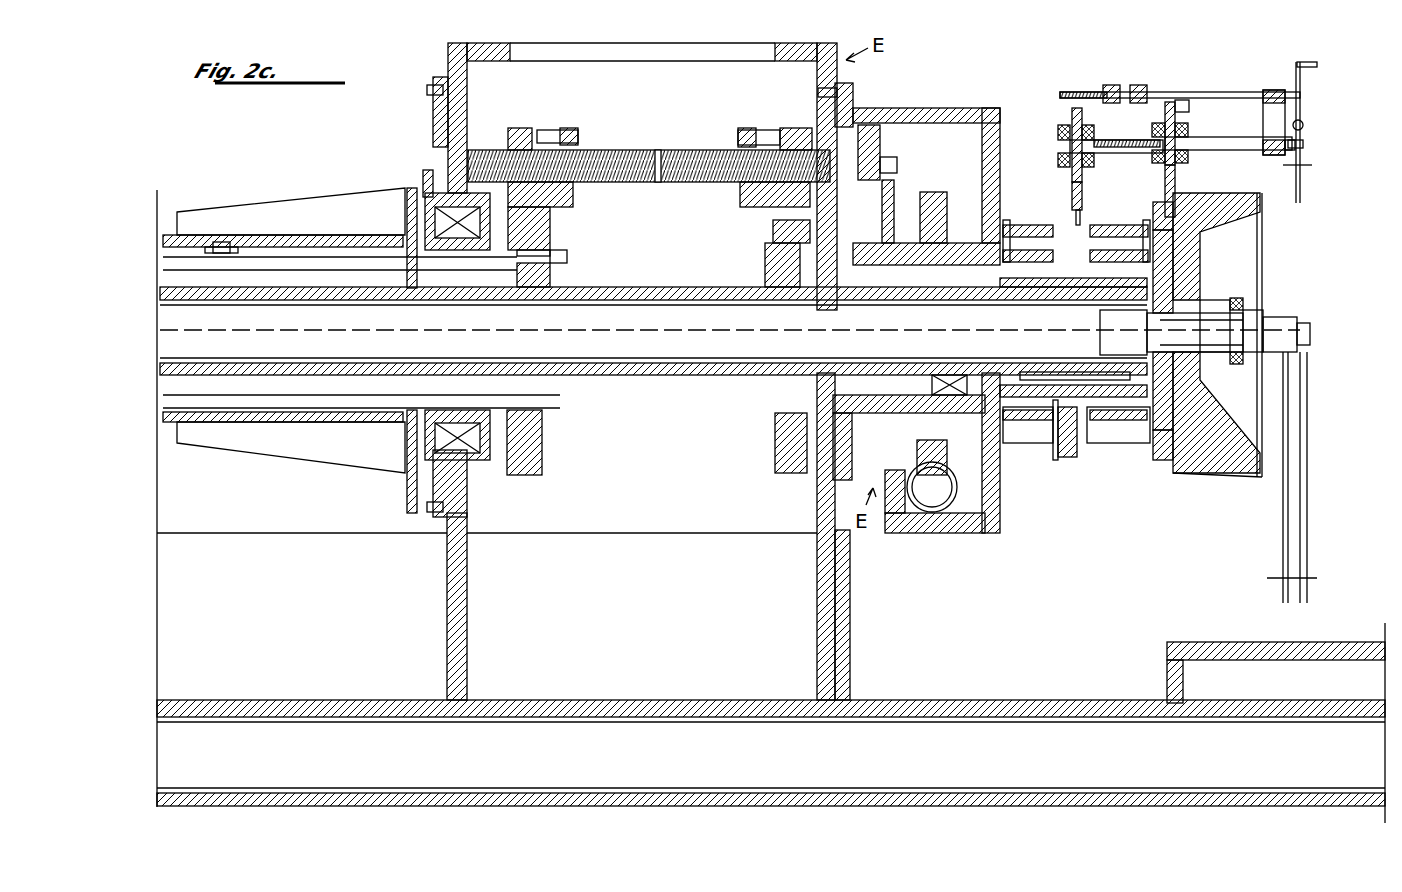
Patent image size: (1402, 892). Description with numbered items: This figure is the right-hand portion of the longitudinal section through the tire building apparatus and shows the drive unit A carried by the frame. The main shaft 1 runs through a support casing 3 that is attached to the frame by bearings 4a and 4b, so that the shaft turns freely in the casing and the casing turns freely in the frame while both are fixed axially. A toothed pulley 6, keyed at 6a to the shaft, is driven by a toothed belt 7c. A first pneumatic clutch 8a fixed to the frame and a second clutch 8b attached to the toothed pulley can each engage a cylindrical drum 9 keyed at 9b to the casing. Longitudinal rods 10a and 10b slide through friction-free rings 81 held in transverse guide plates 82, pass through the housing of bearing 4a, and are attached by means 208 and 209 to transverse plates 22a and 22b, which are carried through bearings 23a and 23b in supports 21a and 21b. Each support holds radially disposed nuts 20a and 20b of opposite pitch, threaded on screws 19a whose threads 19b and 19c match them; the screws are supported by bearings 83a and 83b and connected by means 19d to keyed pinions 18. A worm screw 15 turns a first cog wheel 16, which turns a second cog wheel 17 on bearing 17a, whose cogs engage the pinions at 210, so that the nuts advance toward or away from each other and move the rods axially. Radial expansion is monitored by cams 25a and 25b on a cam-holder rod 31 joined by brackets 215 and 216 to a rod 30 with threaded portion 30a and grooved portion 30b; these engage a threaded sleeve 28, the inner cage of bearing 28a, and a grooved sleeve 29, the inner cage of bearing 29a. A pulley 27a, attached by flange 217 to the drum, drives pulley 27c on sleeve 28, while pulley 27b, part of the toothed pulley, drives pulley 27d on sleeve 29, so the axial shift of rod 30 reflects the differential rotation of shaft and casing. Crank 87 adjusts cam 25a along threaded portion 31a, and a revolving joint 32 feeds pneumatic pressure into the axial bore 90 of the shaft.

The main shaft 1 is at (627, 312).
The support casing 3 is at (663, 312).
The bearing 4a is at (422, 188).
The bearing 4b is at (952, 283).
The toothed pulley 6 is at (1240, 208).
The key 6a is at (1210, 300).
The toothed belt 7c is at (1306, 398).
The first pneumatically controlled clutch 8a is at (1023, 432).
The second pneumatically operated clutch 8b is at (1112, 433).
The cylindrical drum 9 is at (1050, 435).
The key 9b is at (1045, 372).
The longitudinal rod 10a is at (262, 255).
The longitudinal rod 10b is at (572, 402).
The worm screw 15 is at (920, 500).
The first cog wheel 16 is at (940, 476).
The second cog wheel 17 is at (897, 240).
The bearing 17a is at (850, 265).
The keyed pinion 18 is at (880, 140).
The screw 19a is at (604, 150).
The threads 19b is at (618, 182).
The threads 19c is at (690, 182).
The connecting means 19d is at (897, 163).
The nut 20a is at (546, 130).
The nut 20b is at (745, 135).
The support 21a is at (516, 128).
The support 21b is at (790, 128).
The transverse plate 22a is at (550, 278).
The transverse plate 22b is at (765, 262).
The bearing 23a is at (551, 224).
The bearing 23b is at (772, 232).
The cam 25a is at (1112, 85).
The cam 25b is at (1140, 85).
The pulley 27a is at (1072, 188).
The pulley 27b is at (1177, 183).
The pulley 27c is at (1072, 112).
The pulley 27d is at (1165, 170).
The threaded sleeve 28 is at (1096, 137).
The bearing 28a is at (1060, 128).
The grooved sleeve 29 is at (1215, 140).
The bearing 29a is at (1180, 105).
The rod 30 is at (1238, 152).
The threaded portion 30a is at (1113, 153).
The grooved portion 30b is at (1268, 130).
The cam-holder rod 31 is at (1232, 92).
The threaded portion 31a is at (1075, 92).
The revolving joint 32 is at (1245, 302).
The friction free ring 81 is at (222, 243).
The transverse guide plate 82 is at (198, 292).
The bearing 83a is at (433, 125).
The bearing 83b is at (853, 110).
The crank 87 is at (1298, 70).
The axial bore 90 is at (740, 337).
The attaching means 208 is at (567, 255).
The attaching means 209 is at (820, 340).
The engagement 210 is at (893, 205).
The bracket 215 is at (1183, 100).
The bracket 216 is at (1300, 118).
The flange 217 is at (1062, 455).
The drive unit A is at (667, 423).